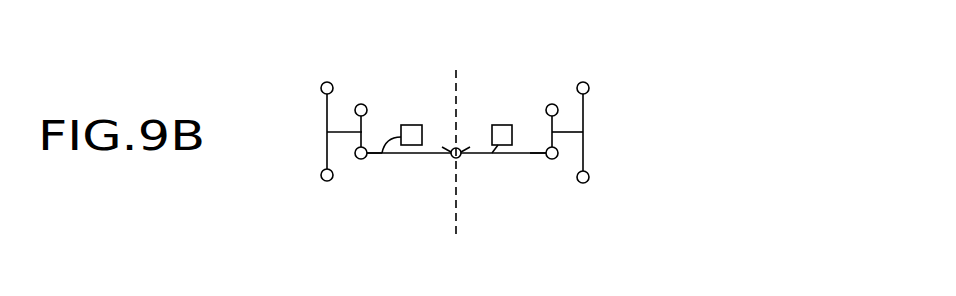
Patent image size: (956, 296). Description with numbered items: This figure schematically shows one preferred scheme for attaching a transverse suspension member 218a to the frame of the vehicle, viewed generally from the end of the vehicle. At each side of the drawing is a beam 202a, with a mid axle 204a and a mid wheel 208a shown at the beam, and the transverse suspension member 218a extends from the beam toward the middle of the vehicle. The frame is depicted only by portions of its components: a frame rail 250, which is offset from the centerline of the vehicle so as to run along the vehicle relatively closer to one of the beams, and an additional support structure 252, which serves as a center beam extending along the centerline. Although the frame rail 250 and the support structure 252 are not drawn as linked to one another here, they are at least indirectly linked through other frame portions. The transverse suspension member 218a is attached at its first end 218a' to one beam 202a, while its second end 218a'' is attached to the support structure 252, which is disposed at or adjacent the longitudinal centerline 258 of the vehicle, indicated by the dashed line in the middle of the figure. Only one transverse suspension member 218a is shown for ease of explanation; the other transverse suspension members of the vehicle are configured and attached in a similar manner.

The beam 202a is at (366, 120).
The mid axle 204a is at (343, 132).
The mid wheel 208a is at (327, 113).
The transverse suspension member 218a is at (453, 224).
The first end of transverse suspension member 218a' is at (447, 195).
The second end of transverse suspension member 218a'' is at (435, 218).
The frame rail 250 is at (383, 155).
The support structure 252 is at (468, 138).
The longitudinal centerline 258 is at (460, 90).